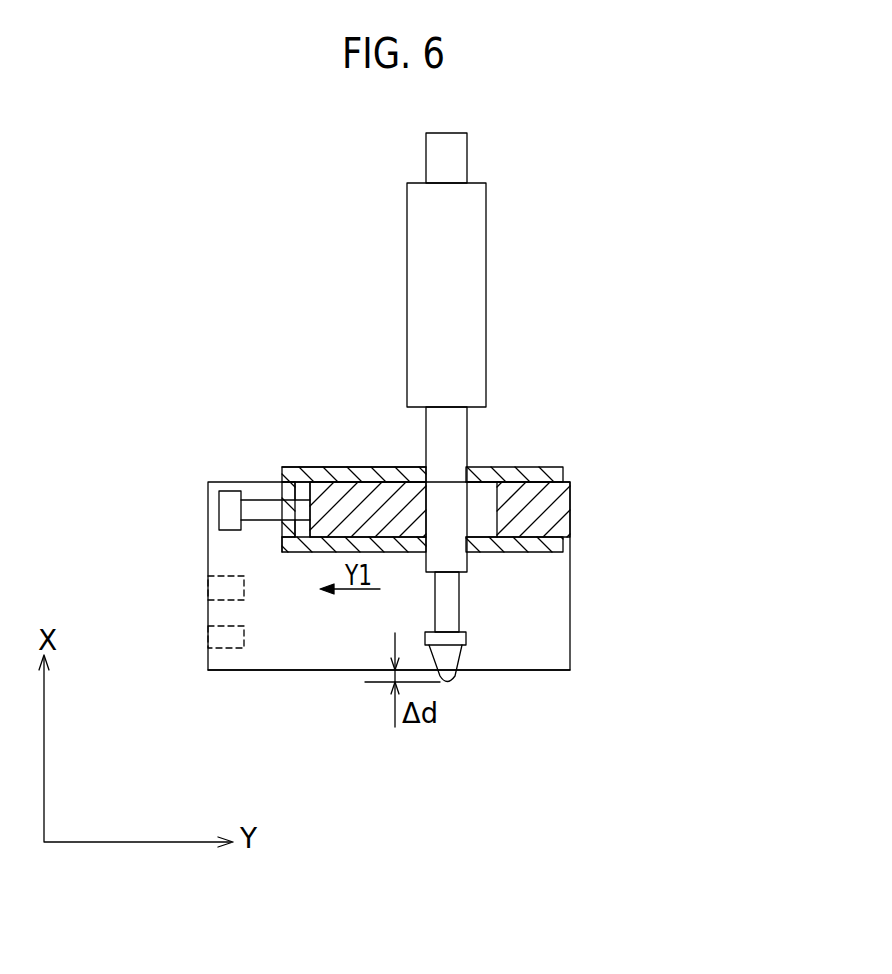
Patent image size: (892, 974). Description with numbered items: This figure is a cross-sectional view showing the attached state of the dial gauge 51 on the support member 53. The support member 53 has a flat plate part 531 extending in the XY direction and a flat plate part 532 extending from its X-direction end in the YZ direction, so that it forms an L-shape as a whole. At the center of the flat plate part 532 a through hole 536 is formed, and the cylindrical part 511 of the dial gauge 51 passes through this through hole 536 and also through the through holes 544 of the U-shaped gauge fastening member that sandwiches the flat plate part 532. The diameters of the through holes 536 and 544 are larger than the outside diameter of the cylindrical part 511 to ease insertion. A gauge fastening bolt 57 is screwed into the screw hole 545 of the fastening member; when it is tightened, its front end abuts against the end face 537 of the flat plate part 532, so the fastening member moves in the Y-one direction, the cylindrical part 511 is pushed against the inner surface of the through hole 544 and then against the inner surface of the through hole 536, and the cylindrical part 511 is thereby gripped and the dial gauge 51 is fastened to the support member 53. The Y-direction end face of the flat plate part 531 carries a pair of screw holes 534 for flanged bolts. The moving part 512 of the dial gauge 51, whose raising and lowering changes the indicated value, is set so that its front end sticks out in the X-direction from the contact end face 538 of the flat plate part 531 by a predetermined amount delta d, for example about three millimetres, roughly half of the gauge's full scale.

The dial gauge 51 is at (496, 292).
The cylindrical part 511 is at (467, 442).
The moving part 512 is at (462, 653).
The support member 53 is at (578, 648).
The flat plate part 531 is at (570, 582).
The flat plate part 532 is at (570, 507).
The screw holes 534 is at (212, 633).
The through hole 536 is at (497, 517).
The end face 537 is at (290, 516).
The end face (contact end face) 538 is at (343, 670).
The through holes 544 is at (402, 470).
The screw hole 545 is at (290, 516).
The gauge fastening bolt 57 is at (262, 500).